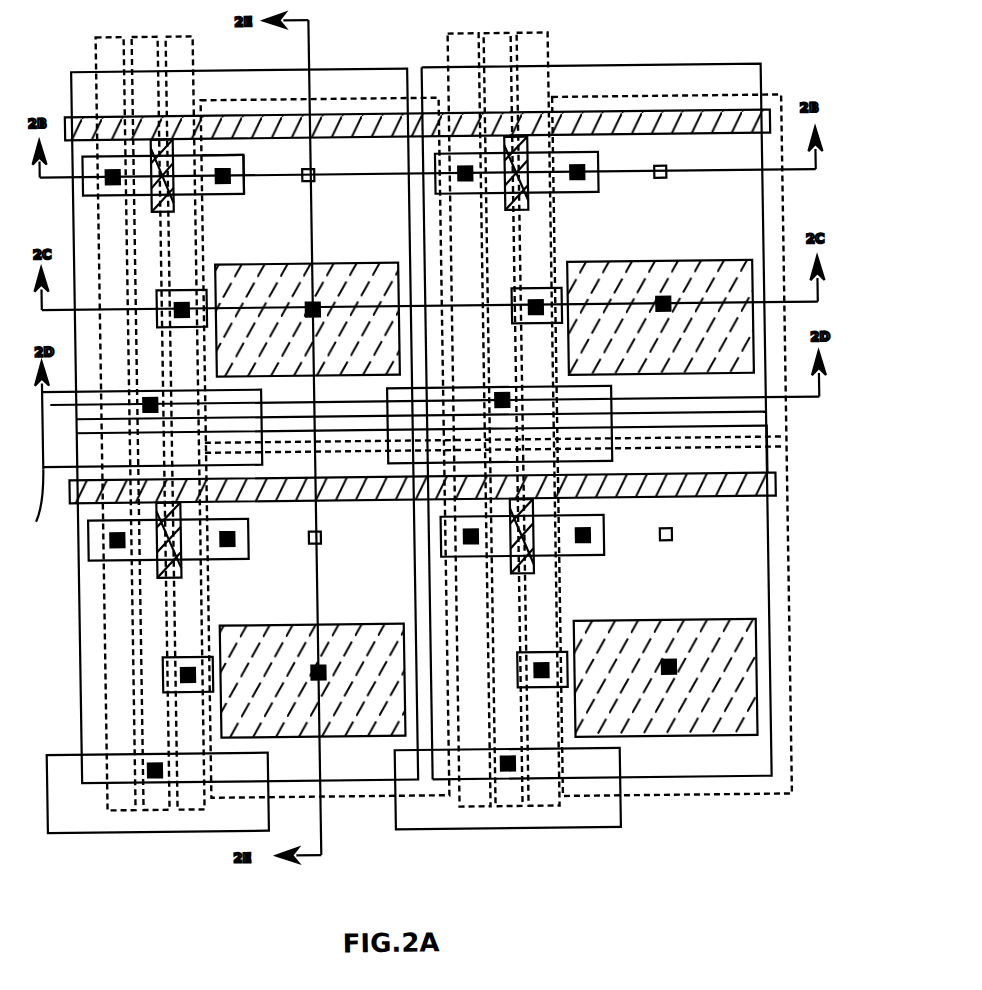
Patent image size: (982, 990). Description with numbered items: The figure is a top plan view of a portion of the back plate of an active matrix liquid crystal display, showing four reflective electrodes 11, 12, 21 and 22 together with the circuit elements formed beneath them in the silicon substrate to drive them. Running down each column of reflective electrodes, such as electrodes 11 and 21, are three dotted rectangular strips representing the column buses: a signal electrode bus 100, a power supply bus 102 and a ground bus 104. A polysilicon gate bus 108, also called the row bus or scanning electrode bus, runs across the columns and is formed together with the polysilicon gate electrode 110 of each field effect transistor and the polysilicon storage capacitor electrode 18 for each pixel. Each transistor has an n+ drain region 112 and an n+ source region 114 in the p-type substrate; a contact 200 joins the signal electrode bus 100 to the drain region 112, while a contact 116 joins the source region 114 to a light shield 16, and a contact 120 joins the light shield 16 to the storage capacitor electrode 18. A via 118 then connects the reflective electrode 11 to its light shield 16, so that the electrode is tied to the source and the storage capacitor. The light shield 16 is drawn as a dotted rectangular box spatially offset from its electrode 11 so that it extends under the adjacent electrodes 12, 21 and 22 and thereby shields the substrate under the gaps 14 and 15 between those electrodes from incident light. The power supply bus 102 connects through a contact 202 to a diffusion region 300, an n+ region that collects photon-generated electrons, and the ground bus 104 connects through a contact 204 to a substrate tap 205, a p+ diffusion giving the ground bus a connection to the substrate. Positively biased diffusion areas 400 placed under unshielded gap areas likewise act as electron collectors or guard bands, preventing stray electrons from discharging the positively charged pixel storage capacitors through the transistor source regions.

The reflective electrode 11 is at (389, 83).
The reflective electrode 12 is at (749, 78).
The gap 14 is at (410, 92).
The gap 15 is at (334, 427).
The light shield 16 is at (257, 104).
The polysilicon storage capacitor electrode 18 is at (243, 286).
The reflective electrode 21 is at (85, 673).
The reflective electrode 22 is at (733, 593).
The signal electrode bus 100 is at (108, 38).
The power supply bus 102 is at (145, 38).
The ground bus 104 is at (178, 38).
The polysilicon gate bus 108 is at (86, 118).
The polysilicon gate electrode 110 is at (180, 198).
The drain region 112 is at (88, 188).
The source region 114 is at (233, 168).
The contact 116 is at (221, 170).
The via 118 is at (313, 173).
The contact 120 is at (311, 304).
The contact 200 is at (112, 188).
The contact 202 is at (147, 394).
The contact 204 is at (178, 292).
The substrate tap 205 is at (193, 292).
The diffusion region 300 is at (148, 469).
The diffusion area 400 is at (457, 392).